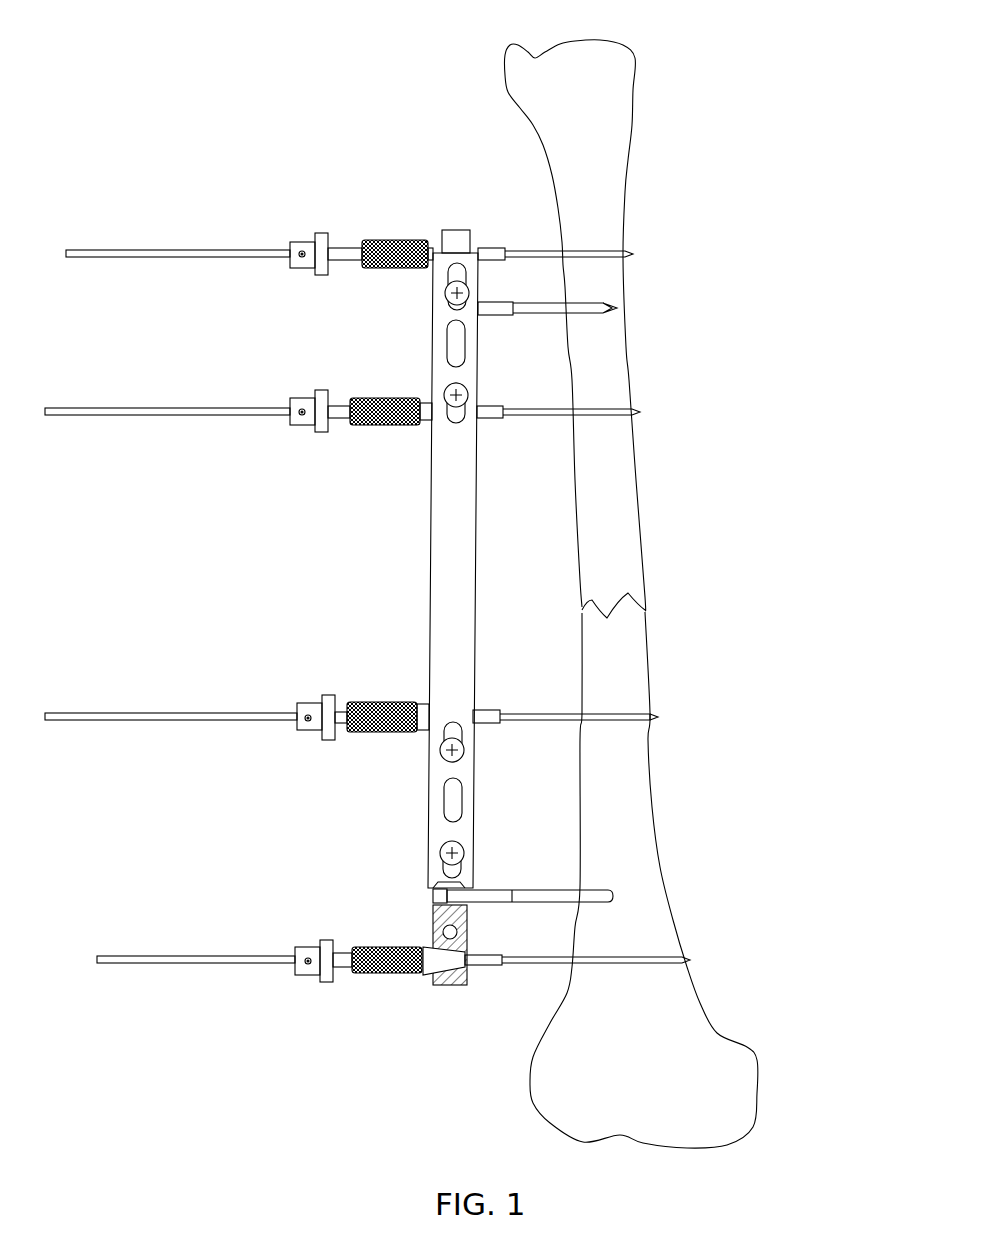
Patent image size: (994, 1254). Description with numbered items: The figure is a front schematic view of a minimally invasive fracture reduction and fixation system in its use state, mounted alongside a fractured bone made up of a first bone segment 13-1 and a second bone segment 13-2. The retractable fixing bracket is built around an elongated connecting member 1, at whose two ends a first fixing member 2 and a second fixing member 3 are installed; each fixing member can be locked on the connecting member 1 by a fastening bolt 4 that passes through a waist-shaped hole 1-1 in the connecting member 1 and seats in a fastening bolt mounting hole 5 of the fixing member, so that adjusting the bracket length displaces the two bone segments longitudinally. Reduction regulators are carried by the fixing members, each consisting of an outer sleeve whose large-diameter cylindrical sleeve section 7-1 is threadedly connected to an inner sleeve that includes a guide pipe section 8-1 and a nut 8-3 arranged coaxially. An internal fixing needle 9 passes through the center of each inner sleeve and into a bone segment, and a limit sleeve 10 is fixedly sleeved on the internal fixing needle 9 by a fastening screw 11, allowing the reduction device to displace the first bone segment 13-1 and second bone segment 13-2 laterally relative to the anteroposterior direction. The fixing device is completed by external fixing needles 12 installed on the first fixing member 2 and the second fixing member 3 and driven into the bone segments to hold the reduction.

The connecting member 1 is at (457, 530).
The waist-shaped hole 1-1 is at (458, 347).
The first fixing member 2 is at (455, 240).
The second fixing member 3 is at (447, 985).
The fastening bolt 4 is at (447, 388).
The fastening bolt mounting hole 5 is at (410, 973).
The large-diameter cylindrical sleeve section 7-1 is at (383, 703).
The guide pipe section 8-1 is at (542, 715).
The nut 8-3 is at (327, 713).
The internal fixing needle 9 is at (615, 718).
The limit sleeve 10 is at (303, 722).
The fastening screw 11 is at (308, 722).
The external fixing needle 12 is at (508, 887).
The first bone segment 13-1 is at (605, 195).
The second bone segment 13-2 is at (658, 1003).